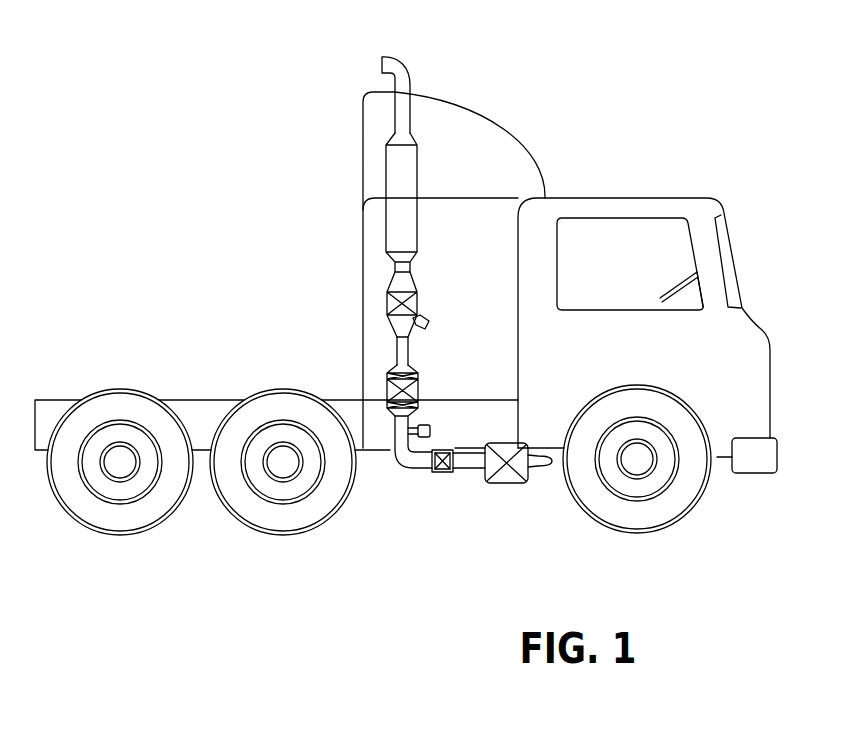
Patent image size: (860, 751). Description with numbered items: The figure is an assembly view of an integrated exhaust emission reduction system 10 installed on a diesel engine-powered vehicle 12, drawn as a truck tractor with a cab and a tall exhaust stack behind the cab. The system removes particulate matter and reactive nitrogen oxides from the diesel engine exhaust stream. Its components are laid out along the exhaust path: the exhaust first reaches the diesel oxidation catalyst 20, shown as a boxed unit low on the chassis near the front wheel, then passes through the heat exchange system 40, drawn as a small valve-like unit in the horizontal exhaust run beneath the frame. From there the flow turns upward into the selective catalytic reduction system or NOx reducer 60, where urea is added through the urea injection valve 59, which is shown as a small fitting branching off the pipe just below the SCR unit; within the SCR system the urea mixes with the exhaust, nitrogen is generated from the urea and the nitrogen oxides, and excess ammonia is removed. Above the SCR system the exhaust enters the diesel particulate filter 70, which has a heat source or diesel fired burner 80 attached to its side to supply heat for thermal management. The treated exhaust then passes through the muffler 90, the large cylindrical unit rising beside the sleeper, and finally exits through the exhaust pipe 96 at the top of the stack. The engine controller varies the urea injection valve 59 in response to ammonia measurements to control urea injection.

The exhaust emission reduction system 10 is at (348, 126).
The vehicle 12 is at (676, 198).
The diesel oxidation catalyst 20 is at (510, 478).
The heat exchange system 40 is at (443, 472).
The urea injection valve 59 is at (430, 431).
The selective catalytic reduction system 60 is at (388, 375).
The diesel particulate filter 70 is at (388, 300).
The diesel fired burner 80 is at (430, 320).
The muffler 90 is at (386, 212).
The exhaust pipe 96 is at (403, 73).